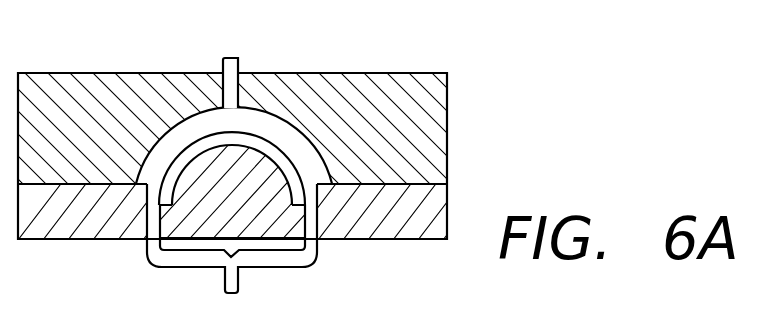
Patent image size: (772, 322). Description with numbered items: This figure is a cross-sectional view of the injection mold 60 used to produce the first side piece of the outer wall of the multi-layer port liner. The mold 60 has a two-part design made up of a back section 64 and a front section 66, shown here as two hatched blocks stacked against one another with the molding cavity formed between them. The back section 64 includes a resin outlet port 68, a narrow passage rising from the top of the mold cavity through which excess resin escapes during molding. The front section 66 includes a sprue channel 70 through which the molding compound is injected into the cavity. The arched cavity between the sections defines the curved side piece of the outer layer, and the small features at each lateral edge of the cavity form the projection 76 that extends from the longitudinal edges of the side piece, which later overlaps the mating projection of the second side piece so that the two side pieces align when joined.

The mold 60 is at (309, 165).
The back section 64 is at (43, 82).
The front section 66 is at (43, 230).
The resin outlet port 68 is at (248, 72).
The sprue channel 70 is at (173, 257).
The projection 76 is at (153, 193).